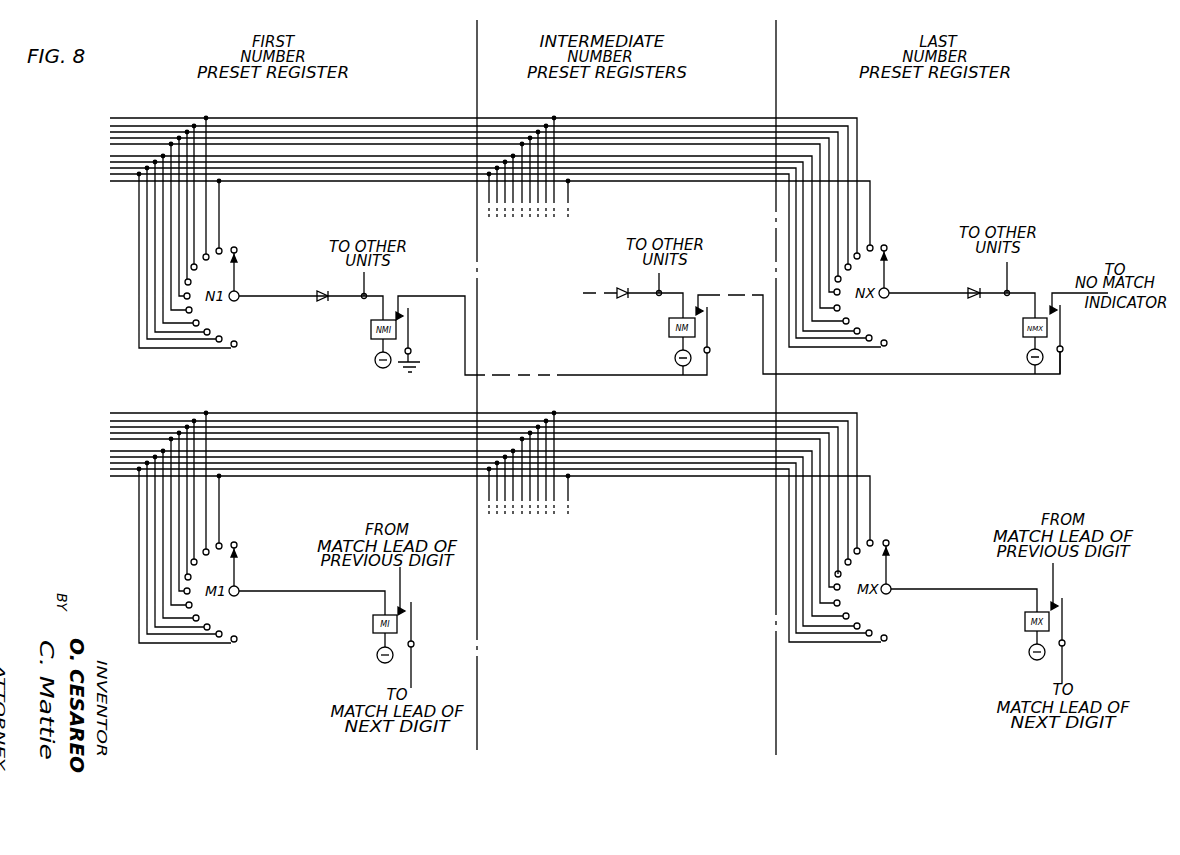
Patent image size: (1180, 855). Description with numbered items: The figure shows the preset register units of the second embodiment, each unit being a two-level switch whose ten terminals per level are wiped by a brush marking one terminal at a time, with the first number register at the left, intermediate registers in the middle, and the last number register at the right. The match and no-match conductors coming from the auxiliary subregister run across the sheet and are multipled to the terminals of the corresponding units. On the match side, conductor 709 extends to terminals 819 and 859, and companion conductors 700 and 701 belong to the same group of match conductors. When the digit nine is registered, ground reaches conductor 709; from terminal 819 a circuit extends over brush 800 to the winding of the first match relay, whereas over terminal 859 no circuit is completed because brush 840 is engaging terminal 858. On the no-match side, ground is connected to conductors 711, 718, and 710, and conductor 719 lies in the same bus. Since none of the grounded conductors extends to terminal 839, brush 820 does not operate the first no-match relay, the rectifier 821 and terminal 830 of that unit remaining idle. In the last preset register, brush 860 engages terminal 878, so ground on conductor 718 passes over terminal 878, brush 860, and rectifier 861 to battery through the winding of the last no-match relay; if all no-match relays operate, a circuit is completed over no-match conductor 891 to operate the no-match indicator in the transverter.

The conductor 711 is at (300, 118).
The conductor 710 is at (250, 183).
The first number preset register conductor 719 is at (313, 176).
The conductor 718 is at (393, 170).
The contact 830 is at (223, 250).
The brush 820 is at (236, 272).
The diode 821 is at (317, 298).
The terminal 839 is at (237, 346).
The brush 860 is at (886, 274).
The rectifier 861 is at (972, 299).
The terminal 878 is at (872, 335).
The no-match conductor 891 is at (1078, 296).
The match register conductor 701 is at (317, 413).
The match register conductor 700 is at (242, 482).
The conductor 709 is at (313, 471).
The brush 800 is at (238, 570).
The terminal 819 is at (237, 641).
The brush 840 is at (890, 566).
The terminal 858 is at (874, 630).
The terminal 859 is at (888, 641).